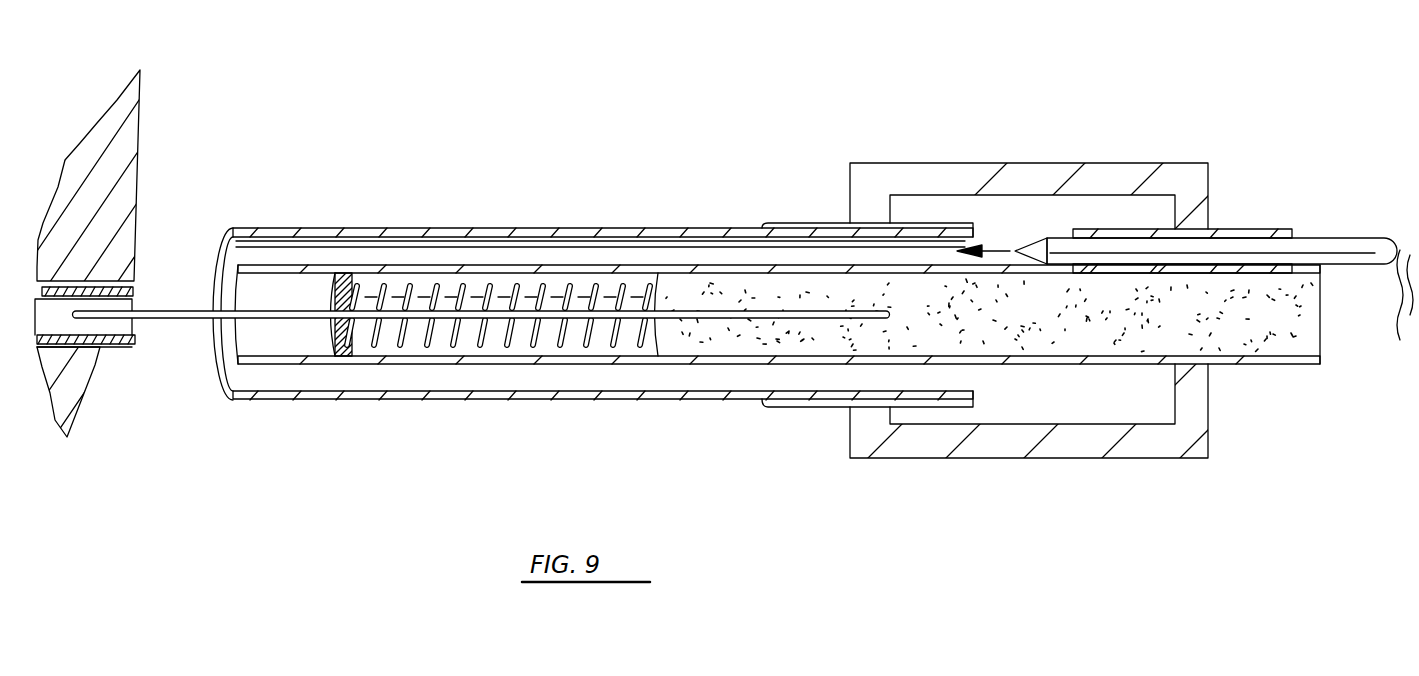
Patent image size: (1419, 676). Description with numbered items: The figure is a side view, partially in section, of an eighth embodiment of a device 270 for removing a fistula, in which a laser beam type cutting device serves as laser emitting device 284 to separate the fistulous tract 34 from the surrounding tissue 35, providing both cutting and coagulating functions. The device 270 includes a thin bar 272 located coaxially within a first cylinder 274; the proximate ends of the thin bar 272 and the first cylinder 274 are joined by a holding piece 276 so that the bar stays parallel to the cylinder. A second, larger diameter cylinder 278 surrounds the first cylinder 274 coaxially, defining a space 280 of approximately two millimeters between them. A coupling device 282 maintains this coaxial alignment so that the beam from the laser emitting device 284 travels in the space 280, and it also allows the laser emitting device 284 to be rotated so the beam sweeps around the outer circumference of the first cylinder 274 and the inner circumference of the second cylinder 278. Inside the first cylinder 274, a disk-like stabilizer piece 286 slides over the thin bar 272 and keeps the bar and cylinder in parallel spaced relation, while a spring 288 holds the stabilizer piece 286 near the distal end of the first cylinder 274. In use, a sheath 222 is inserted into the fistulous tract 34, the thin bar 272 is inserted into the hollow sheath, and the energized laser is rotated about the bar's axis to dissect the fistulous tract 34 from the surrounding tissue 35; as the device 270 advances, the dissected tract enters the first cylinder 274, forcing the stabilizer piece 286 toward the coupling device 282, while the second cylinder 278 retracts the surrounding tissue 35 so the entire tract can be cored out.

The device 270 is at (578, 100).
The fistulous tract 34 is at (80, 350).
The surrounding tissue 35 is at (123, 226).
The sheath 222 is at (120, 345).
The thin bar 272 is at (280, 362).
The first cylinder 274 is at (418, 348).
The holding piece 276 is at (698, 348).
The second cylinder 278 is at (403, 237).
The space 280 is at (552, 243).
The coupling device 282 is at (1028, 443).
The laser emitting device 284 is at (1252, 250).
The stabilizer piece 286 is at (338, 297).
The spring 288 is at (536, 347).